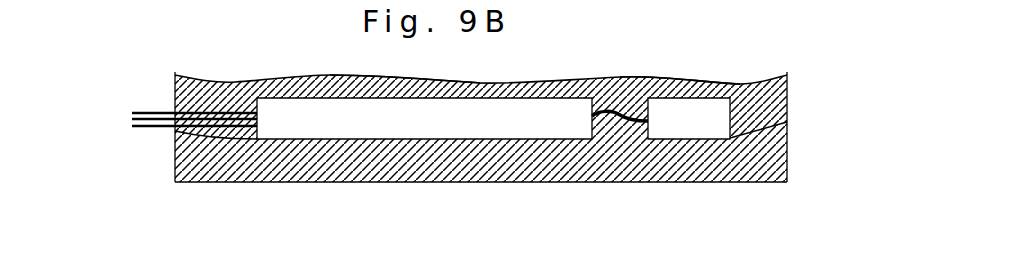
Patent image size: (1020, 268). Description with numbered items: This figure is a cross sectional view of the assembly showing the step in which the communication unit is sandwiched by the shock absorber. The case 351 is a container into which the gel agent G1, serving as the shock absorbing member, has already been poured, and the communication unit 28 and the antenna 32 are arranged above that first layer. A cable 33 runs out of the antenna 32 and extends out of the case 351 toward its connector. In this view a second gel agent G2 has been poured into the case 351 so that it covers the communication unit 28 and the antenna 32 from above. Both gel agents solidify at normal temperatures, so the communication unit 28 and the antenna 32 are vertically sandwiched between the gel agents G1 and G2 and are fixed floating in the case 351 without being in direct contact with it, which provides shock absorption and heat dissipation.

The communication unit 28 is at (405, 80).
The antenna 32 is at (695, 97).
The cable 33 is at (143, 128).
The case 351 is at (787, 85).
The gel agent G1 is at (375, 182).
The gel agent G2 is at (787, 122).